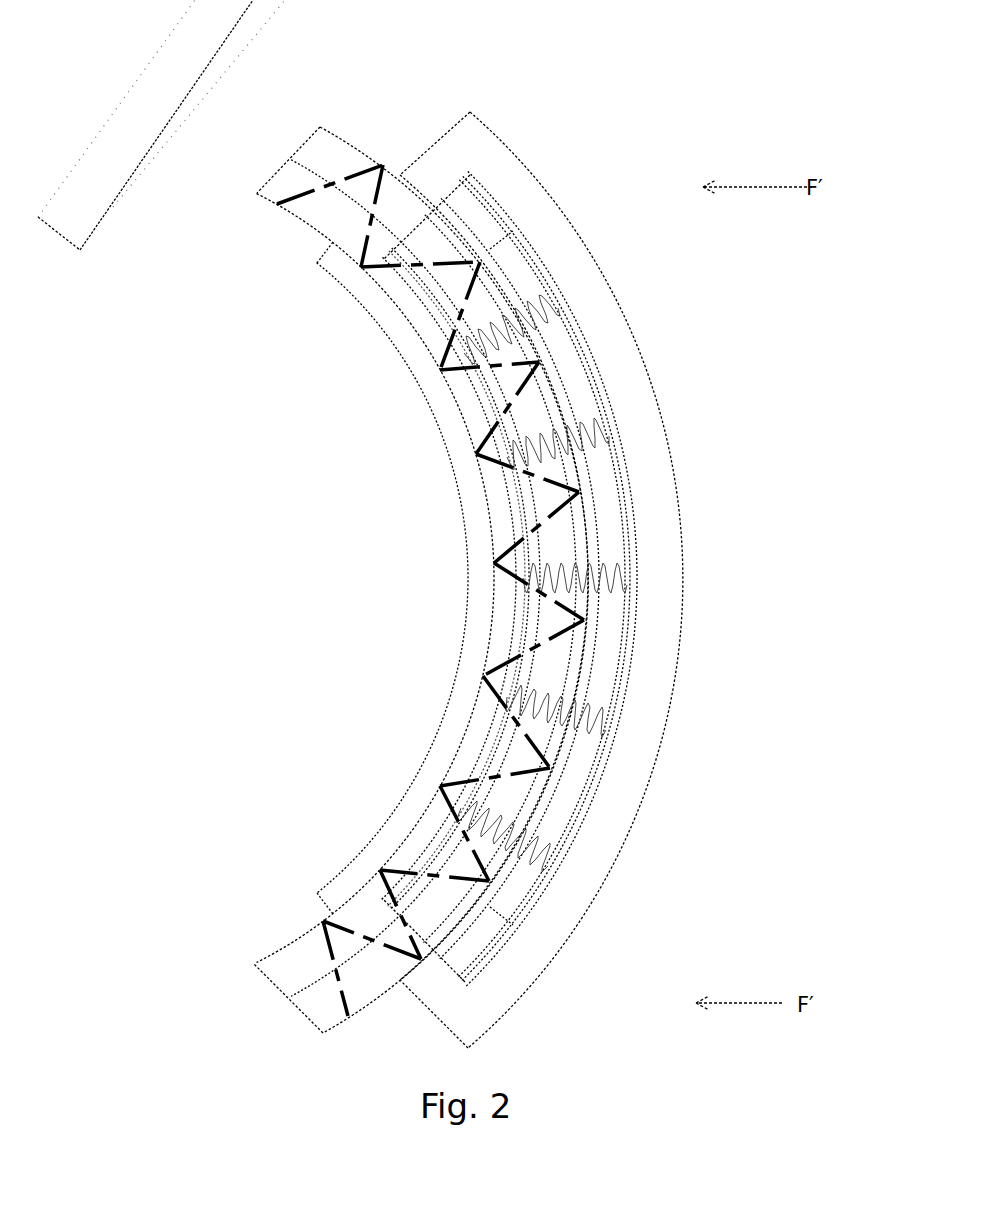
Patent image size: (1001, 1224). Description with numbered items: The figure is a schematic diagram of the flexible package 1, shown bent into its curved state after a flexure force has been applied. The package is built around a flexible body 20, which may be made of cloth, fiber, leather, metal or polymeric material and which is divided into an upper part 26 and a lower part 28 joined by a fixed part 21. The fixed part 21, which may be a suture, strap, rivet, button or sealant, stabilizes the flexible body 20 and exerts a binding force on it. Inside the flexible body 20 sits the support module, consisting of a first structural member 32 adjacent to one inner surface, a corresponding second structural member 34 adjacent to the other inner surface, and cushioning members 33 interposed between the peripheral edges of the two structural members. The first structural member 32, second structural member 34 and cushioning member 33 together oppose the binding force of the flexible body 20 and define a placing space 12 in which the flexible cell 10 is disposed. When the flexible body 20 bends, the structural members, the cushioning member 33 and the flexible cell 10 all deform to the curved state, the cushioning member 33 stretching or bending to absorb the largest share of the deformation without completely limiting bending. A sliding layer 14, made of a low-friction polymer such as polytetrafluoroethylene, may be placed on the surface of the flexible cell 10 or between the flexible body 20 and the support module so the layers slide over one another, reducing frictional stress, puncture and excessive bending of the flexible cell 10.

The flexible package 1 is at (768, 677).
The flexible cell 10 is at (560, 553).
The placing space 12 is at (485, 232).
The sliding layer 14 is at (563, 833).
The flexible body 20 is at (161, 125).
The fixed part 21 is at (280, 200).
The upper part 26 is at (477, 127).
The lower part 28 is at (340, 253).
The first structural member 32 is at (497, 215).
The cushioning member 33 is at (590, 432).
The second structural member 34 is at (470, 378).